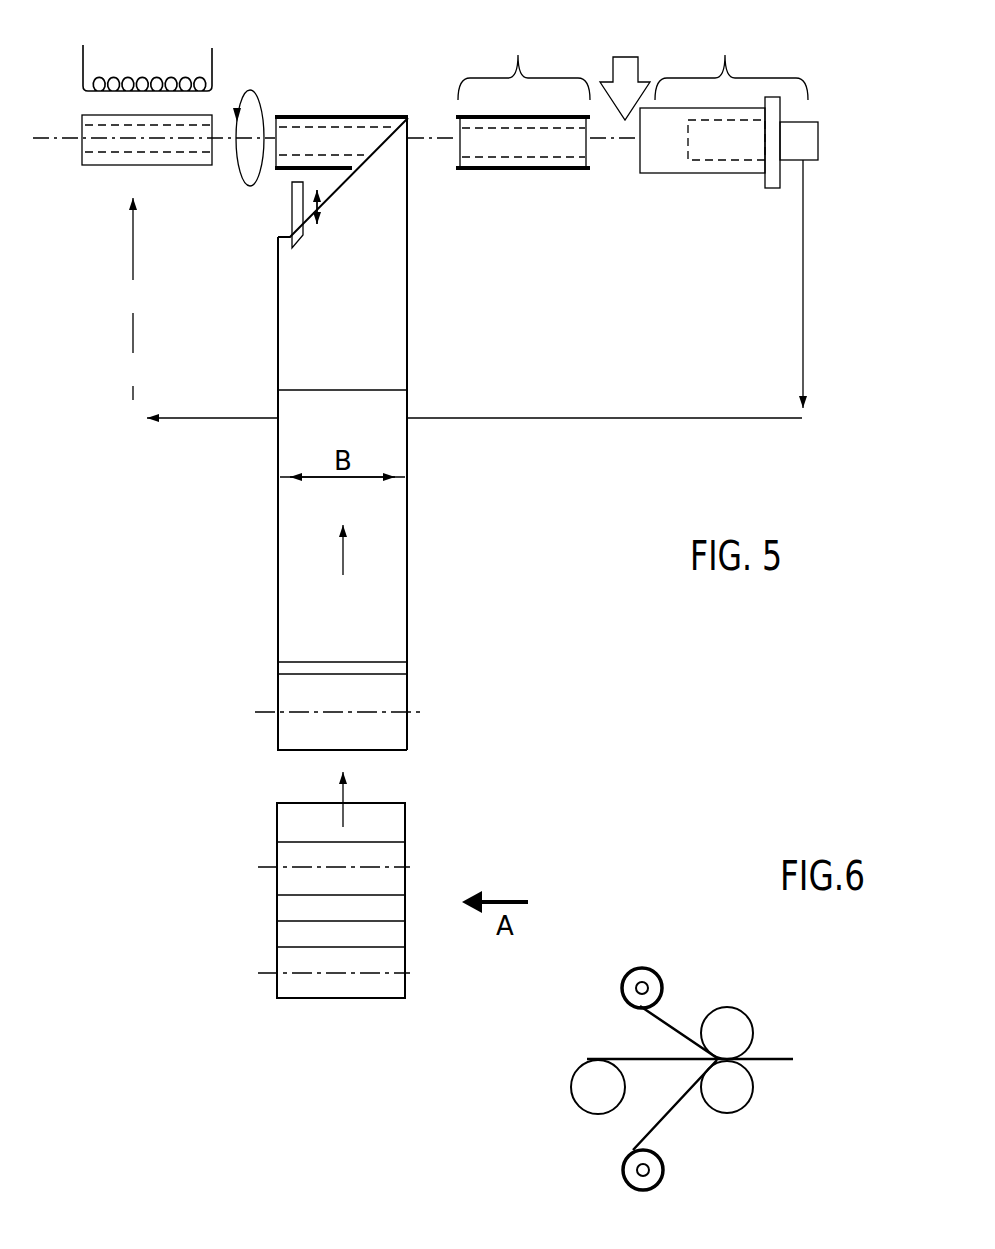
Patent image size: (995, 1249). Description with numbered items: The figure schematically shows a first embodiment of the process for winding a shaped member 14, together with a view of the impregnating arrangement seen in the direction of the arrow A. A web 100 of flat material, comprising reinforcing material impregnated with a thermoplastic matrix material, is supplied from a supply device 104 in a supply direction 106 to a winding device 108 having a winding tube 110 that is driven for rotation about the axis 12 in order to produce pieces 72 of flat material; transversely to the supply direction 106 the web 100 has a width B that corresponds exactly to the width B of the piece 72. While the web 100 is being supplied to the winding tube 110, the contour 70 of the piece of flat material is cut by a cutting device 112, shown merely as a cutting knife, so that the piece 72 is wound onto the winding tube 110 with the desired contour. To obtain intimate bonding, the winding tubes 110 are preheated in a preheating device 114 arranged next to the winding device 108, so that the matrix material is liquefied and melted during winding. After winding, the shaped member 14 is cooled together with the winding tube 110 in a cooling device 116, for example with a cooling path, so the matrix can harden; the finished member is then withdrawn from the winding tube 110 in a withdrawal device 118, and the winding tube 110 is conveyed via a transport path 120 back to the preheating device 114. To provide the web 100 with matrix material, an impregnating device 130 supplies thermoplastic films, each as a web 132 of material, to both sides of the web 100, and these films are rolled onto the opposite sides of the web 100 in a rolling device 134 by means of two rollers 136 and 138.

In FIG. 5, the axis 12 is at (43, 140).
In FIG. 5, the shaped member 14 is at (354, 112).
In FIG. 5, the contour 70 is at (397, 335).
In FIG. 5, the piece of flat material 72 is at (382, 222).
In FIG. 5, the web of flat material 100 is at (313, 594).
In FIG. 6, the web of flat material 100 is at (633, 1058).
In FIG. 5, the supply device 104 is at (270, 472).
In FIG. 5, the supply direction 106 is at (335, 543).
In FIG. 5, the winding device 108 is at (318, 110).
In FIG. 5, the winding tube 110 is at (108, 167).
In FIG. 5, the cutting device 112 is at (300, 217).
In FIG. 5, the preheating device 114 is at (76, 73).
In FIG. 5, the cooling device 116 is at (524, 58).
In FIG. 5, the withdrawal device 118 is at (704, 68).
In FIG. 5, the transport path 120 is at (712, 420).
In FIG. 5, the impregnating device 130 is at (422, 886).
In FIG. 6, the impregnating device 130 is at (677, 1000).
In FIG. 6, the web of material 132 is at (667, 1022).
In FIG. 6, the rolling device 134 is at (768, 1083).
In FIG. 5, the roller 136 is at (398, 855).
In FIG. 6, the roller 136 is at (738, 1035).
In FIG. 6, the roller 138 is at (742, 1095).